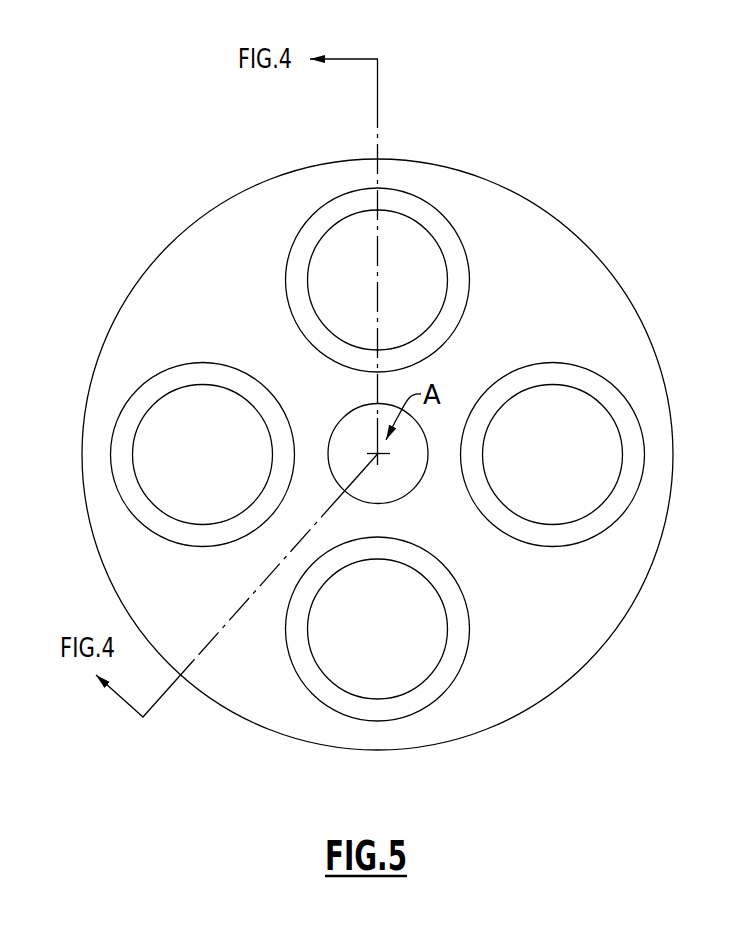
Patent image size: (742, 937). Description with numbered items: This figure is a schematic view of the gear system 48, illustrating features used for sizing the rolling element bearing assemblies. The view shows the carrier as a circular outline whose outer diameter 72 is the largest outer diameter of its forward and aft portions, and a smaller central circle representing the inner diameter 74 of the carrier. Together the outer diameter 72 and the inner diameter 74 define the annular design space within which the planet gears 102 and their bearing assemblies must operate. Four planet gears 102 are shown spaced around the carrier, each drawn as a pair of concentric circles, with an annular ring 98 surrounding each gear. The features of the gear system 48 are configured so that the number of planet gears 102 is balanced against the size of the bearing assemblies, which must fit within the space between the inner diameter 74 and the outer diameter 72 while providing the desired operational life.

The gear system 48 is at (632, 114).
The outer diameter 72 is at (500, 170).
The inner diameter 74 is at (432, 511).
The annular boss 98 is at (490, 289).
The planet gears 102 is at (400, 233).